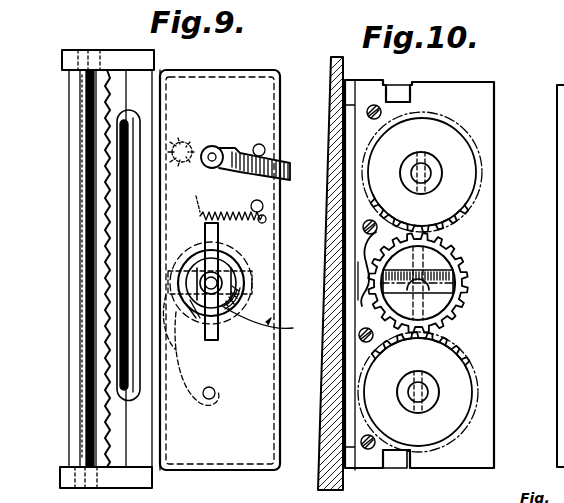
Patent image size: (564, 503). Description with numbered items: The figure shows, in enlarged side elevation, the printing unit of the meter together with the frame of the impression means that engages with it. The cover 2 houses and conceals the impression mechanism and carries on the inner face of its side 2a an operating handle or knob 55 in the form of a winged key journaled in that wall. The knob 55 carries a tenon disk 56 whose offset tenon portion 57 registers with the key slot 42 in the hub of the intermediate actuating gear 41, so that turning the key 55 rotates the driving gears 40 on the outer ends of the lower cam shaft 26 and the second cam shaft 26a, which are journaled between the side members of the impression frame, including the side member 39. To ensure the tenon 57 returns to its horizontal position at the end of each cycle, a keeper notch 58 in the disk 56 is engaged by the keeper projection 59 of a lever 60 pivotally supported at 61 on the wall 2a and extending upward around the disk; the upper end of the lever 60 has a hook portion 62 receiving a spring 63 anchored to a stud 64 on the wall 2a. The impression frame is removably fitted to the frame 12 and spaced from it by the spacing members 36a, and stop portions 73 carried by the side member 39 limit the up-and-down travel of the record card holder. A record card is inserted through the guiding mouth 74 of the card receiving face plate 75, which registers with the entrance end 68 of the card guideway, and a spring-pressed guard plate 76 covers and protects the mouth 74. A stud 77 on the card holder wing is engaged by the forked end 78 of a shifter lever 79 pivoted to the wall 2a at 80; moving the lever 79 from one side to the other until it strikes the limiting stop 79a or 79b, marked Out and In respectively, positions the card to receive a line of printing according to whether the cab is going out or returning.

In FIG. 9, the cover 2 is at (216, 85).
In FIG. 9, the side wall of the cover 2a is at (265, 323).
In FIG. 10, the frame 12 is at (346, 69).
In FIG. 10, the lower cam shaft 26 is at (427, 393).
In FIG. 10, the second cam shaft 26a is at (430, 174).
In FIG. 10, the spacing members 36a is at (340, 75).
In FIG. 10, the side member 39 is at (490, 90).
In FIG. 10, the driving gears 40 is at (446, 382).
In FIG. 10, the intermediate actuating gear 41 is at (440, 270).
In FIG. 10, the key slot 42 is at (452, 292).
In FIG. 9, the operating handle or knob 55 is at (236, 316).
In FIG. 9, the tenon disk 56 is at (248, 262).
In FIG. 9, the offset tenon portion 57 is at (252, 280).
In FIG. 9, the keeper notch 58 is at (216, 338).
In FIG. 9, the keeper projection 59 is at (170, 306).
In FIG. 9, the lever 60 is at (196, 378).
In FIG. 9, the pivot 61 is at (216, 393).
In FIG. 9, the hook portion 62 is at (197, 210).
In FIG. 9, the spring 63 is at (232, 213).
In FIG. 9, the stud 64 is at (267, 218).
In FIG. 9, the entrance end of the guideway 68 is at (128, 283).
In FIG. 10, the stop portions 73 is at (410, 88).
In FIG. 9, the guiding mouth 74 is at (117, 237).
In FIG. 9, the card receiving face plate 75 is at (110, 192).
In FIG. 9, the guard plate 76 is at (100, 113).
In FIG. 9, the stud 77 is at (183, 144).
In FIG. 9, the forked end 78 is at (212, 150).
In FIG. 9, the shifter lever 79 is at (286, 163).
In FIG. 9, the limiting stop 79a is at (265, 148).
In FIG. 9, the limiting stop 79b is at (264, 206).
In FIG. 9, the pivot 80 is at (215, 156).